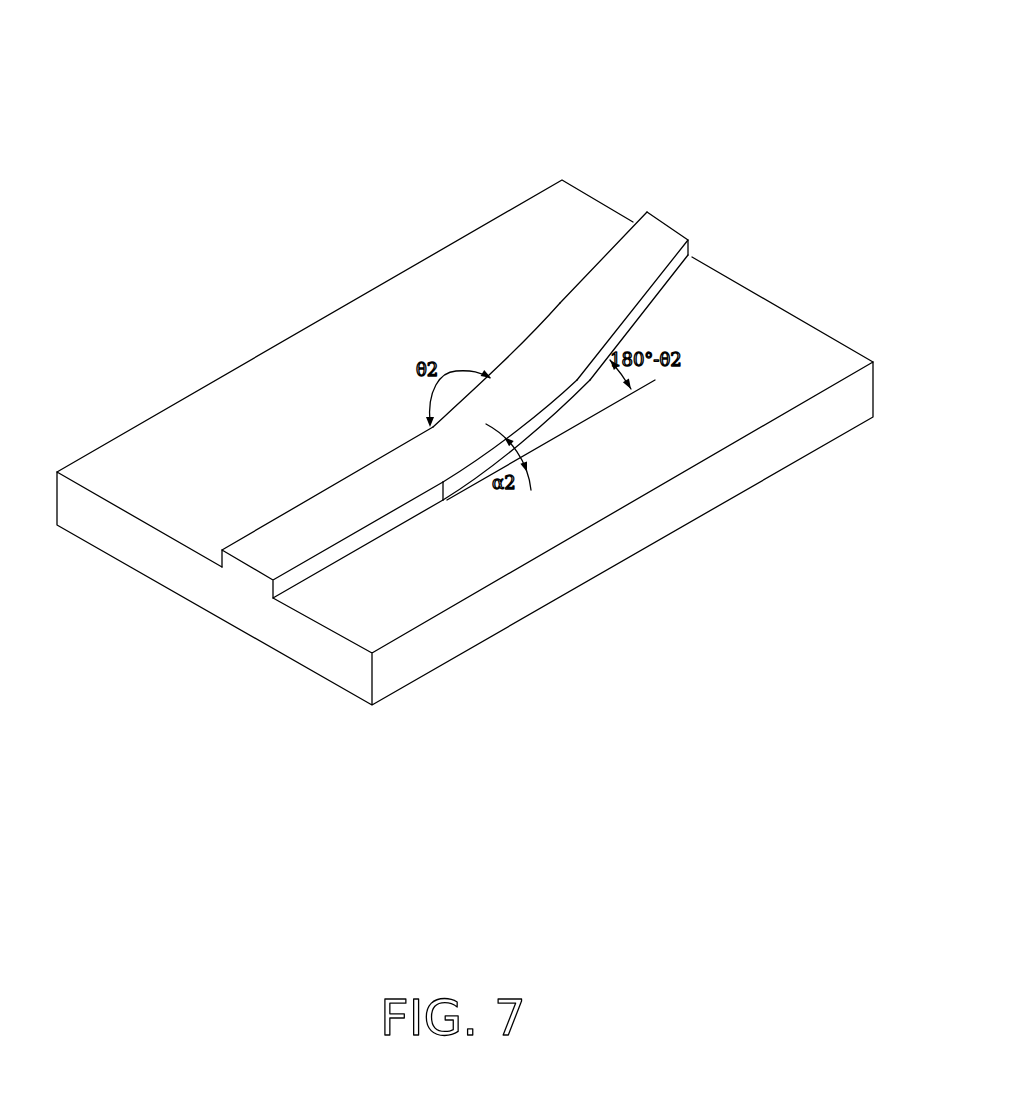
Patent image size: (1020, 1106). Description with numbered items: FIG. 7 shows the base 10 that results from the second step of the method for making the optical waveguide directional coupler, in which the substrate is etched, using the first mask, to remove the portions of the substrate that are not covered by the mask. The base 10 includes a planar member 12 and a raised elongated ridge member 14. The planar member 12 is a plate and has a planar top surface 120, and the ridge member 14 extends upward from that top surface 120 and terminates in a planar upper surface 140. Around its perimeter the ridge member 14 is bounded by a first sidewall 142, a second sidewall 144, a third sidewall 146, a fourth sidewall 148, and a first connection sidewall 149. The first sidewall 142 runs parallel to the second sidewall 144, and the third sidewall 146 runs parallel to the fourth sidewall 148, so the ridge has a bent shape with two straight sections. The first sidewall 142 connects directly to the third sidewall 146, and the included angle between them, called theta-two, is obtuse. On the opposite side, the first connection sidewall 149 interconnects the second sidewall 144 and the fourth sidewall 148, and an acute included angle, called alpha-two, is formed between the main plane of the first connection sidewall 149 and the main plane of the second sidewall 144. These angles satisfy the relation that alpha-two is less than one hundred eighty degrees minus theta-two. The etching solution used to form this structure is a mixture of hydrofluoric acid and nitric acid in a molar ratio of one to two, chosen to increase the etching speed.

The base 10 is at (410, 83).
The planar member 12 is at (833, 335).
The planar top surface 120 is at (763, 320).
The raised elongated ridge member 14 is at (509, 422).
The planar upper surface 140 is at (653, 232).
The first sidewall 142 is at (387, 453).
The second sidewall 144 is at (378, 530).
The third sidewall 146 is at (577, 282).
The fourth sidewall 148 is at (677, 273).
The first connection sidewall 149 is at (542, 417).